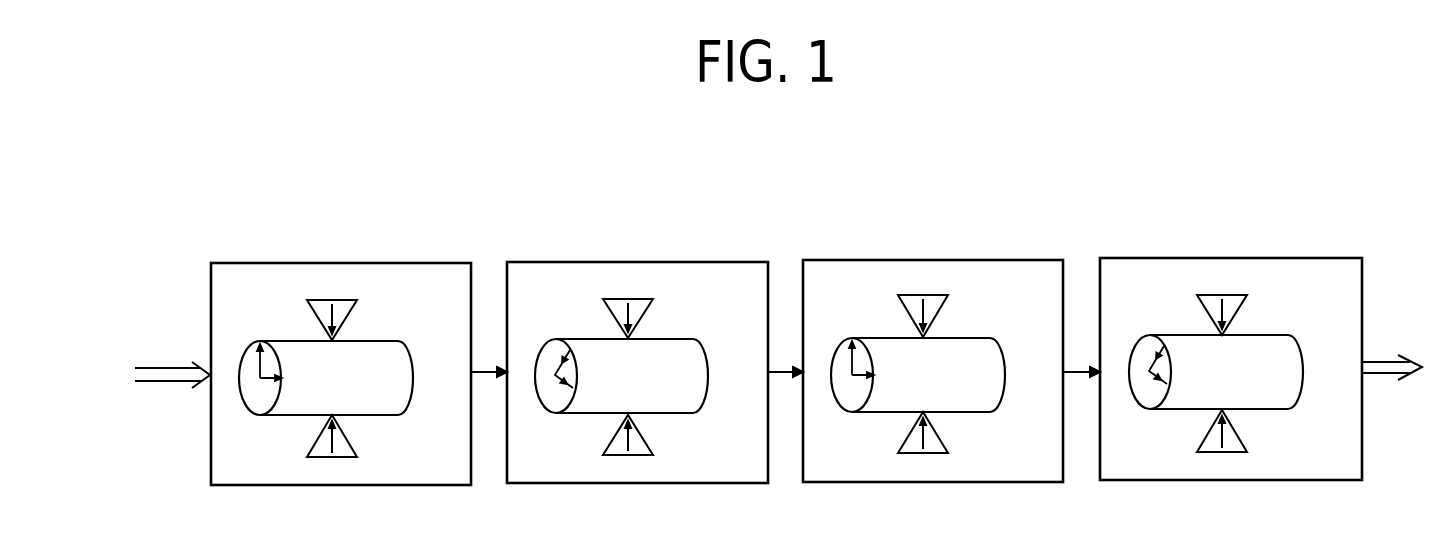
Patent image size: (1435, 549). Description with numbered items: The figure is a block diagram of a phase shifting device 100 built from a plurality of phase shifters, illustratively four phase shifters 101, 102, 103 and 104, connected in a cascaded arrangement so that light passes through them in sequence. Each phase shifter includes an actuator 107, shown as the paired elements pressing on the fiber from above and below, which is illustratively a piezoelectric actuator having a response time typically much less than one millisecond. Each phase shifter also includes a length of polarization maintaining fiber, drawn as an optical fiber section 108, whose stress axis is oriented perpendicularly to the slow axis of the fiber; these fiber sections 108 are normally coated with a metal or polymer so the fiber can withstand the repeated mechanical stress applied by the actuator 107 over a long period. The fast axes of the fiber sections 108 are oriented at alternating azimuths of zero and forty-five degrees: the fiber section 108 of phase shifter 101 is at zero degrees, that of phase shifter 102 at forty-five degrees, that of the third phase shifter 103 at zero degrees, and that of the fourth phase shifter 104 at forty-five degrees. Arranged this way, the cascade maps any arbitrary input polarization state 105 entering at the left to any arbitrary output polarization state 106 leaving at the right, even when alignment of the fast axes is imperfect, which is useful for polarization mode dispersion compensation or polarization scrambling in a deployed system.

The phase shifting device 100 is at (1218, 110).
The first phase shifter 101 is at (355, 262).
The second phase shifter 102 is at (648, 260).
The third phase shifter 103 is at (923, 258).
The fourth phase shifter 104 is at (1230, 257).
The input polarization state 105 is at (177, 367).
The output polarization state 106 is at (1378, 357).
The actuator 107 is at (348, 318).
The optical fiber section 108 is at (408, 348).